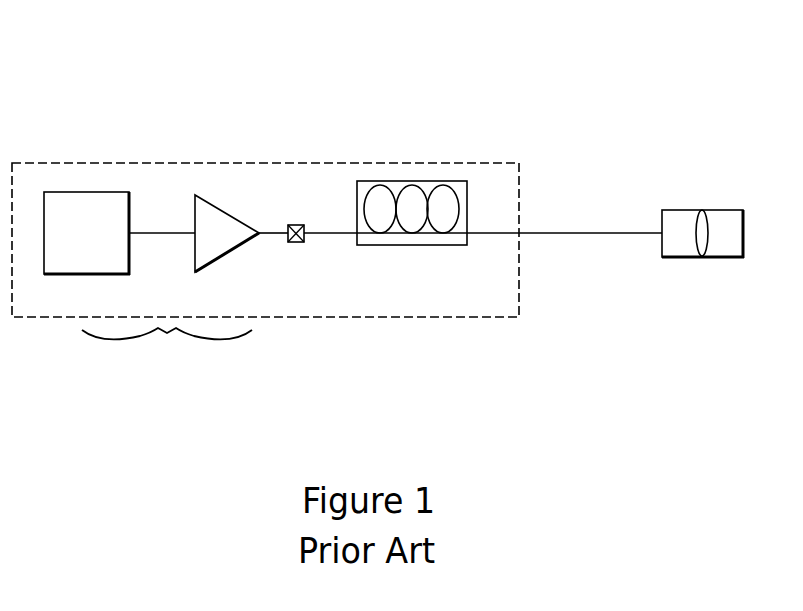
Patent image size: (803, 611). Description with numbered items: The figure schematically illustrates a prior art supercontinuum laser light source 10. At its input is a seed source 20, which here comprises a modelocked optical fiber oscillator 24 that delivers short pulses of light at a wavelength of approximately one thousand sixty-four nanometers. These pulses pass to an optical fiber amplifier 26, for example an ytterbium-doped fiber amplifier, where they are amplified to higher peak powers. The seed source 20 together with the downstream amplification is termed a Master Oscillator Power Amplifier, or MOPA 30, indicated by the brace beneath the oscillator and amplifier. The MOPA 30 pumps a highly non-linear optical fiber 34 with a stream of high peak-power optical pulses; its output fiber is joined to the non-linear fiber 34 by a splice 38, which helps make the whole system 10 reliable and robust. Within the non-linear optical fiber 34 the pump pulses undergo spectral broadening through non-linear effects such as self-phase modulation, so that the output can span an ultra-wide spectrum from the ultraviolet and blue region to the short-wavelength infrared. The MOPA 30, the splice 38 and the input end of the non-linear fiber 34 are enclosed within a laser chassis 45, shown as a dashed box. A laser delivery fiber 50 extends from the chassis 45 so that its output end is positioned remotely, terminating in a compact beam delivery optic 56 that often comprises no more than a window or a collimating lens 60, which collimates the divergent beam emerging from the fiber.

The supercontinuum laser light source 10 is at (524, 101).
The seed source 20 is at (85, 217).
The modelocked optical fiber oscillator 24 is at (85, 264).
The optical fiber amplifier 26 is at (258, 214).
The Master Oscillator Power Amplifier (MOPA) 30 is at (167, 347).
The highly non-linear optical fiber 34 is at (427, 185).
The splice 38 is at (294, 243).
The laser chassis 45 is at (520, 177).
The laser delivery fiber 50 is at (587, 234).
The beam delivery optic 56 is at (701, 244).
The collimating lens 60 is at (703, 212).